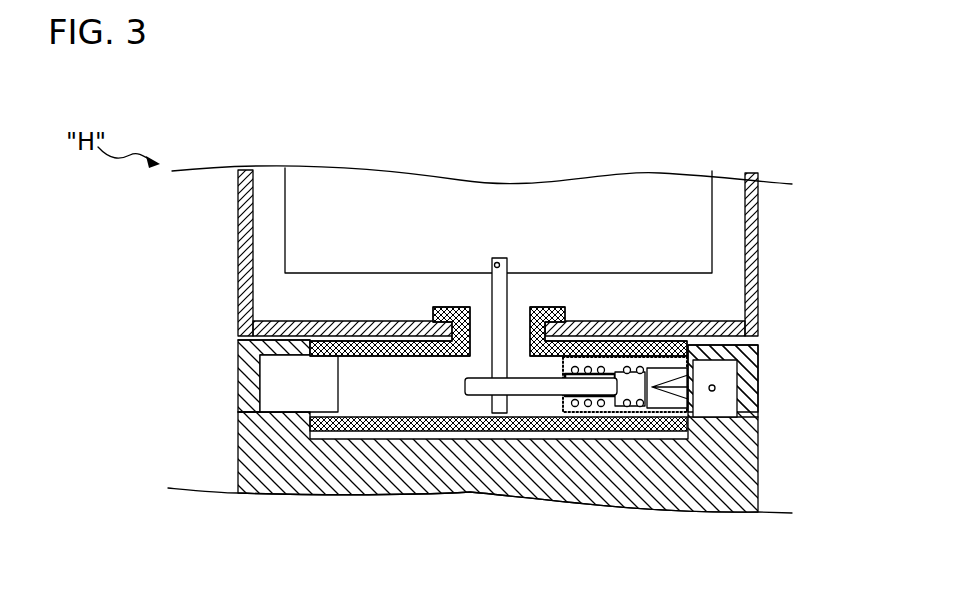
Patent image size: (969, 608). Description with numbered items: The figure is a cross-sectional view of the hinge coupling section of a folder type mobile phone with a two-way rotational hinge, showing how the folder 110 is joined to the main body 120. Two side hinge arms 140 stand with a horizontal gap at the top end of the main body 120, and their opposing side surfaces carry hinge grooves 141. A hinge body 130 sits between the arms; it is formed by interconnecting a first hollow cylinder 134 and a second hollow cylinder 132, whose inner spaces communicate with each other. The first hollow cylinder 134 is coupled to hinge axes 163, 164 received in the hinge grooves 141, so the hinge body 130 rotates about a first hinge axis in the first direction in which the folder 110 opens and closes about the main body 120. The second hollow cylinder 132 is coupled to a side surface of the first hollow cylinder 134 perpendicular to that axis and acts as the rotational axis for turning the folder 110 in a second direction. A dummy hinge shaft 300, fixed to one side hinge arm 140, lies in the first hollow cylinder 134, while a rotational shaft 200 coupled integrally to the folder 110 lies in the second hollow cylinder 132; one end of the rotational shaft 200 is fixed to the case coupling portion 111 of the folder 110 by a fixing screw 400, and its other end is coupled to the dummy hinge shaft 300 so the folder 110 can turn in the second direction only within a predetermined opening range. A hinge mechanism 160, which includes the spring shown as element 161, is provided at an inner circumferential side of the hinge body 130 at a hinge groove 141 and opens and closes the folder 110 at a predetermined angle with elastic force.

The folder 110 is at (240, 215).
The case coupling portion 111 is at (596, 195).
The main body 120 is at (470, 478).
The hinge body 130 is at (326, 430).
The second hollow cylinder 132 is at (532, 335).
The first hollow cylinder 134 is at (363, 347).
The side hinge arm 140 is at (280, 368).
The hinge groove 141 is at (240, 412).
The hinge mechanism 160 is at (690, 388).
The elastic member 161 is at (593, 387).
The hinge axis 163 is at (240, 360).
The hinge axis 164 is at (717, 388).
The rotational shaft 200 is at (492, 403).
The dummy hinge shaft 300 is at (530, 393).
The fixing screw 400 is at (493, 259).